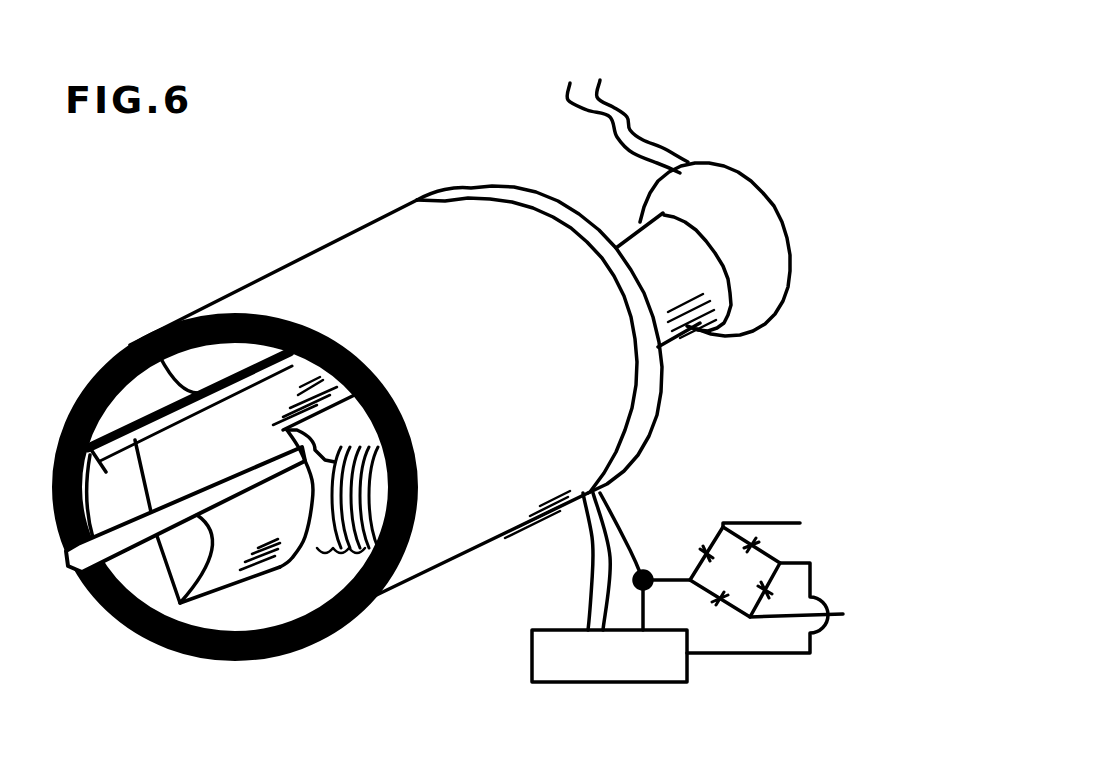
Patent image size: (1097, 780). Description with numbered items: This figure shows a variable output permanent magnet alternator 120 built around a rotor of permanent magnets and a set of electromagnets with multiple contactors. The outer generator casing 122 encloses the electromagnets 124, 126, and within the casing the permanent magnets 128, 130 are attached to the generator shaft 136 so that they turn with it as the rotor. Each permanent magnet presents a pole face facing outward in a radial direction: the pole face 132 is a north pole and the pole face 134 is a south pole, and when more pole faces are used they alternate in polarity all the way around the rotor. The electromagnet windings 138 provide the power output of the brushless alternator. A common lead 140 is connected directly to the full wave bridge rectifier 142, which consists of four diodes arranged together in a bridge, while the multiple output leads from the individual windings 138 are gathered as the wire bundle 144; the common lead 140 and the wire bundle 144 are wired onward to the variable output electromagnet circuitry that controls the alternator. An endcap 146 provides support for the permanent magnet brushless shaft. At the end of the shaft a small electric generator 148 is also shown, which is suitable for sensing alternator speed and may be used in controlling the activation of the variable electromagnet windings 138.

The variable output permanent magnet alternator 120 is at (407, 202).
The outer generator casing 122 is at (333, 243).
The electromagnet 124 is at (307, 557).
The electromagnet 126 is at (139, 442).
The permanent magnet 128 is at (78, 408).
The permanent magnet 130 is at (177, 603).
The pole face 132 is at (237, 578).
The pole face 134 is at (160, 340).
The generator shaft 136 is at (73, 577).
The electromagnet windings 138 is at (353, 560).
The common lead 140 is at (627, 550).
The full wave bridge rectifier 142 is at (717, 527).
The wire bundle 144 is at (590, 562).
The endcap 146 is at (510, 190).
The small electric generator 148 is at (727, 187).